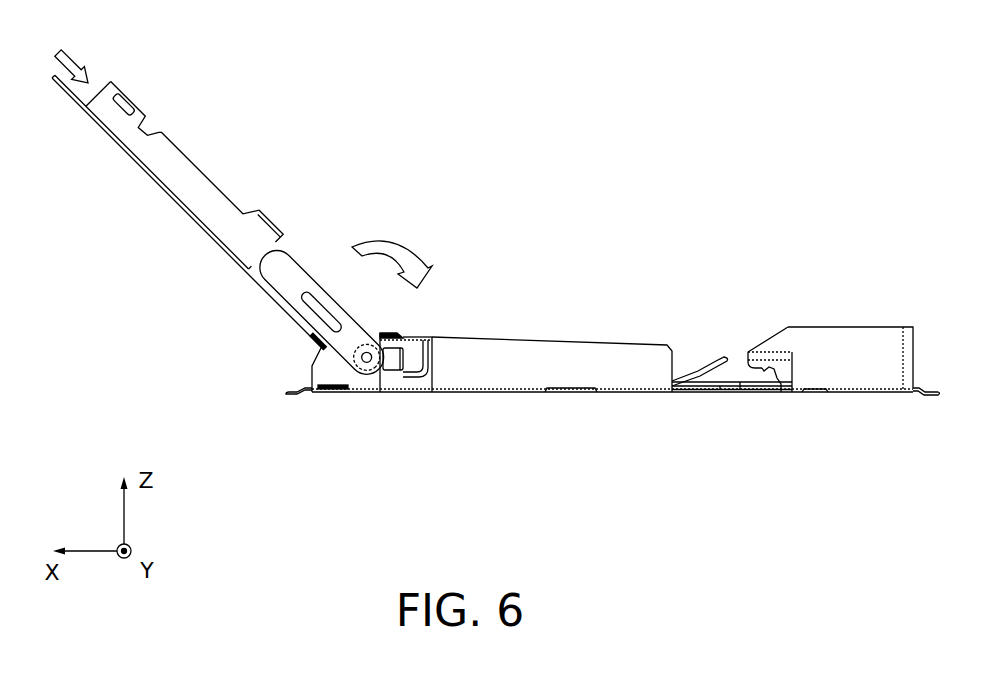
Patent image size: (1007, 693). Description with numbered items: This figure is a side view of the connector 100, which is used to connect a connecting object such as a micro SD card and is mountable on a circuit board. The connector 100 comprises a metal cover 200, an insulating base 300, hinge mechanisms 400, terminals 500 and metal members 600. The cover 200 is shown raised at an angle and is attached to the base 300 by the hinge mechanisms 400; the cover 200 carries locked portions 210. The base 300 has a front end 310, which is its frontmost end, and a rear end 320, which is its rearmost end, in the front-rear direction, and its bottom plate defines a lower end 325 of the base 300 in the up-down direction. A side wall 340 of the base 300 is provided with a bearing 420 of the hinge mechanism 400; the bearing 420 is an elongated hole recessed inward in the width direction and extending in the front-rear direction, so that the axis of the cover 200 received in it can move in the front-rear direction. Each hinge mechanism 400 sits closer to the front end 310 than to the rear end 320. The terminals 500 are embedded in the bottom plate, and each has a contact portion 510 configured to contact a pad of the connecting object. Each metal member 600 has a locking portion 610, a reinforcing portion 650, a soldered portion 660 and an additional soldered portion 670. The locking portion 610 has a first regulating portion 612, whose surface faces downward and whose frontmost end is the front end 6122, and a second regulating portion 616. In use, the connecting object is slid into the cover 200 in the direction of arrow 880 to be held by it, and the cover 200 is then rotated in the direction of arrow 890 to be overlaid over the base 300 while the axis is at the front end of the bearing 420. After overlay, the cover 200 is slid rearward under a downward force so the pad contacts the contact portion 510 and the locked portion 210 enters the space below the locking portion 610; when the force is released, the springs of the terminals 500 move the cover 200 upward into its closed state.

The connector 100 is at (802, 92).
The cover 200 is at (167, 203).
The locked portion 210 is at (113, 82).
The base 300 is at (516, 327).
The front end 310 is at (313, 374).
The rear end 320 is at (915, 372).
The lower end 325 is at (620, 393).
The side wall 340 is at (530, 369).
The hinge mechanism 400 is at (404, 406).
The bearing 420 is at (407, 379).
The terminal 500 is at (294, 393).
The contact portion 510 is at (722, 357).
The metal member 600 is at (702, 398).
The locking portion 610 is at (789, 346).
The first regulating portion 612 is at (785, 367).
The second regulating portion 616 is at (783, 370).
The front end 6122 is at (770, 368).
The reinforcing portion 650 is at (832, 394).
The soldered portion 660 is at (724, 397).
The additional soldered portion 670 is at (936, 395).
The arrow 880 is at (70, 72).
The arrow 890 is at (397, 243).